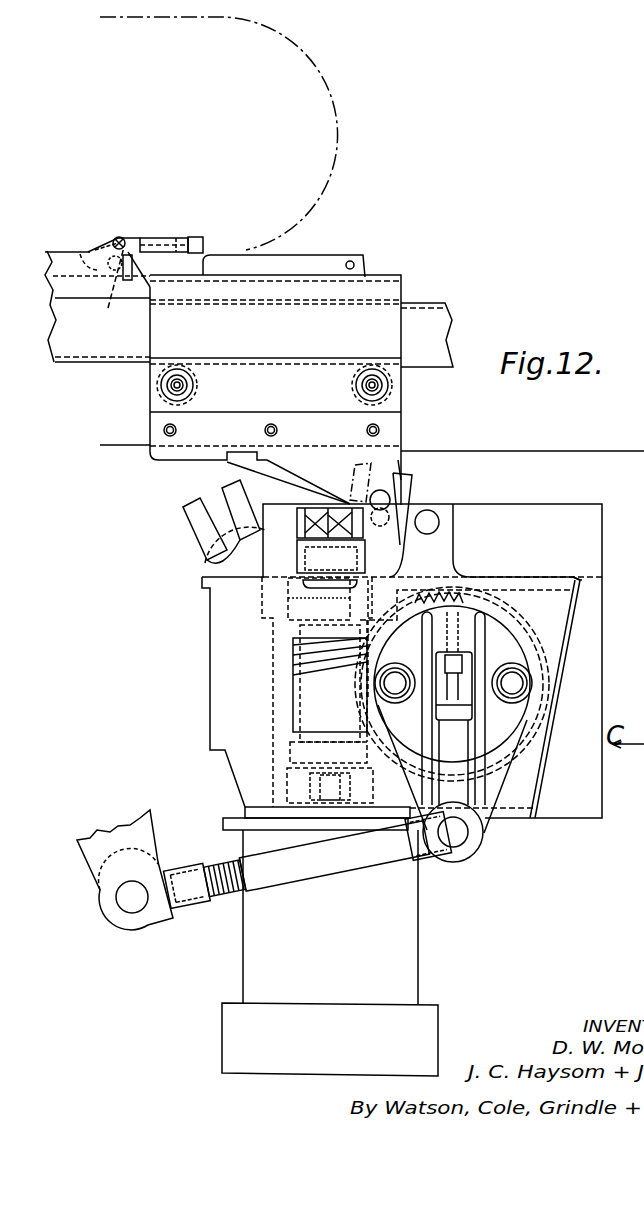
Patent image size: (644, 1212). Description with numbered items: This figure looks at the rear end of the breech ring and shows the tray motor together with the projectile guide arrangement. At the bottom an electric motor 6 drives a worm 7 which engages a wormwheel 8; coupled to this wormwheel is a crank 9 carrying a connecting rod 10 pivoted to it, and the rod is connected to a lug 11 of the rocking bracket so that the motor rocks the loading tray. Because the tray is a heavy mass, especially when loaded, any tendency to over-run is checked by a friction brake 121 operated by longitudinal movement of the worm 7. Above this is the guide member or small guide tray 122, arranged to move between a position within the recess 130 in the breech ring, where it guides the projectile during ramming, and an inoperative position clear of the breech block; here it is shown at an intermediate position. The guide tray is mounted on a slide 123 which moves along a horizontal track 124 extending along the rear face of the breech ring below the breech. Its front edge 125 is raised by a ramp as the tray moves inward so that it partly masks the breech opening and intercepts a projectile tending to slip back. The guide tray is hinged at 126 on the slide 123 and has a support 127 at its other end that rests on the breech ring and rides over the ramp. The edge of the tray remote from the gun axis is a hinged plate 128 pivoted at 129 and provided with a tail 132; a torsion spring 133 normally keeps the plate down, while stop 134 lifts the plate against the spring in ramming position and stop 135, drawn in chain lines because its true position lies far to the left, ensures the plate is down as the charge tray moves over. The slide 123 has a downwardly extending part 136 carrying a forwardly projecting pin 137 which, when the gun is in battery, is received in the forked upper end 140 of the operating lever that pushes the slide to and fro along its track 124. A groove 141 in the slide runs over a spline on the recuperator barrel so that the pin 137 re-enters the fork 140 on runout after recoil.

The electric motor 6 is at (254, 942).
The worm 7 is at (292, 690).
The wormwheel 8 is at (540, 658).
The crank 9 is at (500, 780).
The connecting rod 10 is at (297, 878).
The lug 11 is at (145, 818).
The friction brake 121 is at (300, 545).
The guide member or guide tray 122 is at (155, 240).
The slide 123 is at (302, 286).
The horizontal track 124 is at (413, 318).
The front edge 125 is at (178, 236).
The hinge 126 is at (198, 240).
The support 127 is at (80, 251).
The hinged plate 128 is at (95, 249).
The pivot 129 is at (118, 238).
The recess 130 is at (330, 96).
The tail 132 is at (128, 283).
The torsion spring 133 is at (124, 246).
The stop 134 is at (352, 264).
The stop 135 is at (110, 271).
The slide part 136 is at (397, 460).
The pin 137 is at (408, 487).
The forked upper end 140 is at (404, 472).
The groove 141 is at (232, 458).